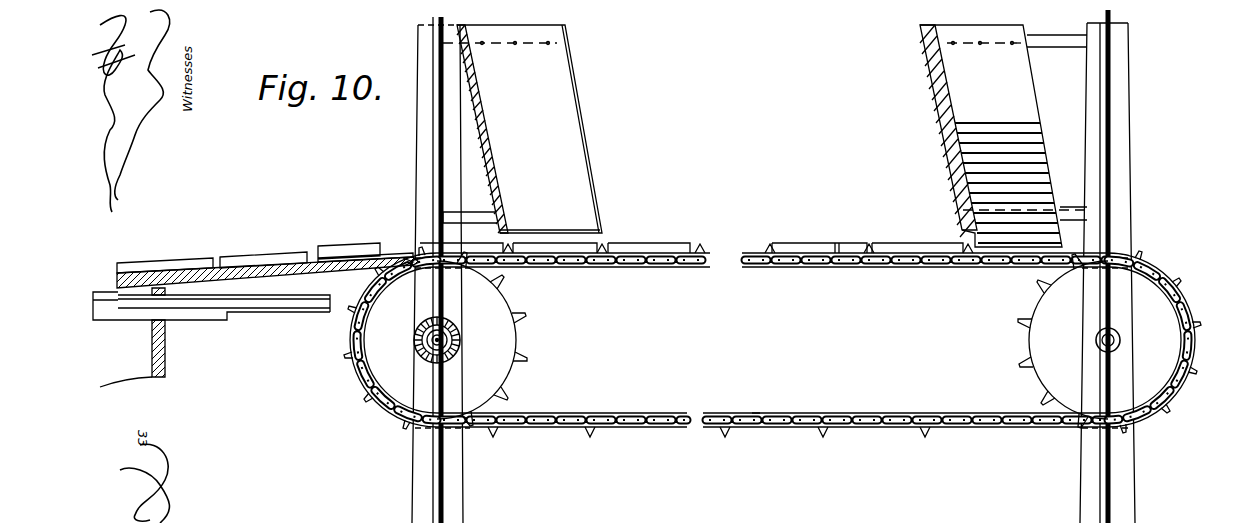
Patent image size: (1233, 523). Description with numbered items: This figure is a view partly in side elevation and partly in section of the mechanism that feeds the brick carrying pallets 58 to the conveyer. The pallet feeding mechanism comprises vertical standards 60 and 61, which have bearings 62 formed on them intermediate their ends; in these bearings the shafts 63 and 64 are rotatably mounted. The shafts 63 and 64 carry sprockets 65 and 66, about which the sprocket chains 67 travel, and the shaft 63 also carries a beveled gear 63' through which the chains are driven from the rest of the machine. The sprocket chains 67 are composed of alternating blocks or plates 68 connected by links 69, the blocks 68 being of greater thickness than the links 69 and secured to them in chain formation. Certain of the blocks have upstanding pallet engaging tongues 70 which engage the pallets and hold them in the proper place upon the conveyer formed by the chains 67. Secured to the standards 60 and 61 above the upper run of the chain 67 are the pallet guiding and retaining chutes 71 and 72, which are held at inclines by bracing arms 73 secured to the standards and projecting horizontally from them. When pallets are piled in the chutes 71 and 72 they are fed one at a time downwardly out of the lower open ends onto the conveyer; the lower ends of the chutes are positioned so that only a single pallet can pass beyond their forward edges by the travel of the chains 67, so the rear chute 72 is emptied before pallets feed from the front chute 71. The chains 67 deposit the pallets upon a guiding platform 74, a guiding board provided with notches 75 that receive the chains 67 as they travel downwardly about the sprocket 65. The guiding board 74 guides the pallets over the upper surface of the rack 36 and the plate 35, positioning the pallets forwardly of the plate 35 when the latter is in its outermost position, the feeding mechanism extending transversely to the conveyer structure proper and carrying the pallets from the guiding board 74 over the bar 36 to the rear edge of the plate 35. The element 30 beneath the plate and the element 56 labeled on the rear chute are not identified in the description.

The supporting leg 30 is at (167, 367).
The plate 35 is at (105, 305).
The rack 36 is at (293, 312).
The slats 56 is at (1047, 176).
The brick carrying pallets 58 is at (340, 262).
The vertical standard 60 is at (463, 512).
The vertical standard 61 is at (1117, 503).
The bearings 62 is at (1096, 332).
The shaft 63 is at (390, 362).
The beveled gear 63' is at (480, 329).
The shaft 64 is at (1120, 339).
The sprocket 65 is at (502, 357).
The sprocket 66 is at (1043, 362).
The sprocket chains 67 is at (837, 253).
The blocks or plates 68 is at (708, 266).
The links 69 is at (640, 428).
The pallet engaging tongues 70 is at (700, 243).
The pallet guiding and retaining chute 71 is at (577, 160).
The pallet guiding and retaining chute 72 is at (938, 140).
The bracing arms 73 is at (520, 46).
The guiding platform 74 is at (233, 257).
The notches 75 is at (395, 282).